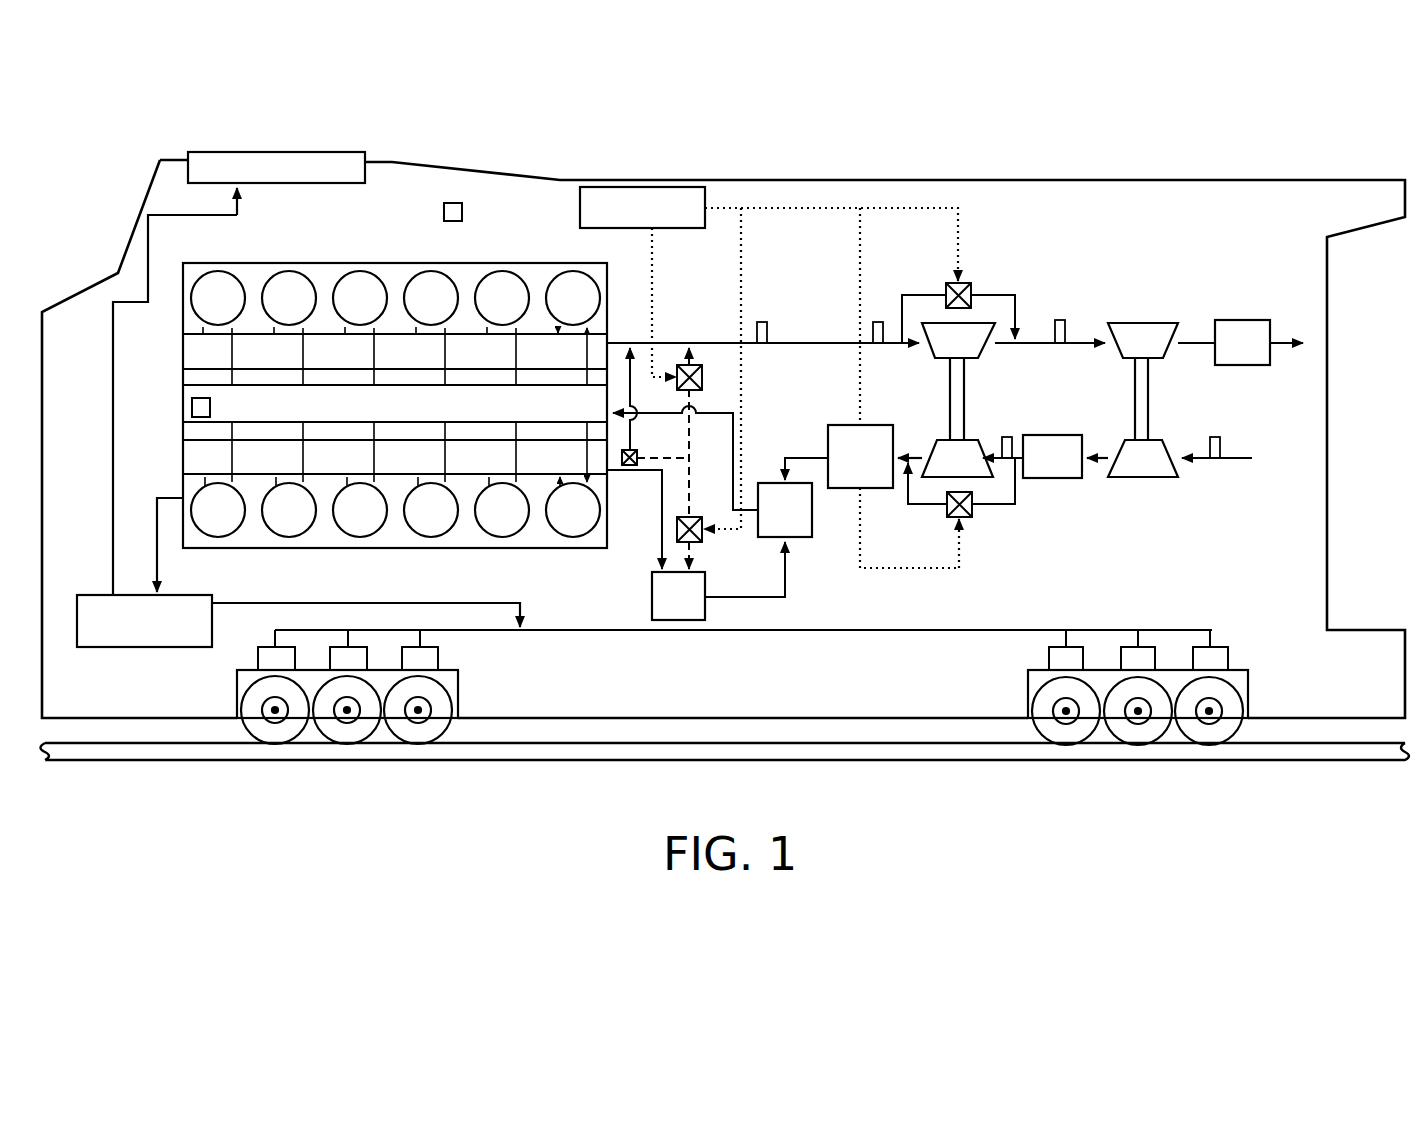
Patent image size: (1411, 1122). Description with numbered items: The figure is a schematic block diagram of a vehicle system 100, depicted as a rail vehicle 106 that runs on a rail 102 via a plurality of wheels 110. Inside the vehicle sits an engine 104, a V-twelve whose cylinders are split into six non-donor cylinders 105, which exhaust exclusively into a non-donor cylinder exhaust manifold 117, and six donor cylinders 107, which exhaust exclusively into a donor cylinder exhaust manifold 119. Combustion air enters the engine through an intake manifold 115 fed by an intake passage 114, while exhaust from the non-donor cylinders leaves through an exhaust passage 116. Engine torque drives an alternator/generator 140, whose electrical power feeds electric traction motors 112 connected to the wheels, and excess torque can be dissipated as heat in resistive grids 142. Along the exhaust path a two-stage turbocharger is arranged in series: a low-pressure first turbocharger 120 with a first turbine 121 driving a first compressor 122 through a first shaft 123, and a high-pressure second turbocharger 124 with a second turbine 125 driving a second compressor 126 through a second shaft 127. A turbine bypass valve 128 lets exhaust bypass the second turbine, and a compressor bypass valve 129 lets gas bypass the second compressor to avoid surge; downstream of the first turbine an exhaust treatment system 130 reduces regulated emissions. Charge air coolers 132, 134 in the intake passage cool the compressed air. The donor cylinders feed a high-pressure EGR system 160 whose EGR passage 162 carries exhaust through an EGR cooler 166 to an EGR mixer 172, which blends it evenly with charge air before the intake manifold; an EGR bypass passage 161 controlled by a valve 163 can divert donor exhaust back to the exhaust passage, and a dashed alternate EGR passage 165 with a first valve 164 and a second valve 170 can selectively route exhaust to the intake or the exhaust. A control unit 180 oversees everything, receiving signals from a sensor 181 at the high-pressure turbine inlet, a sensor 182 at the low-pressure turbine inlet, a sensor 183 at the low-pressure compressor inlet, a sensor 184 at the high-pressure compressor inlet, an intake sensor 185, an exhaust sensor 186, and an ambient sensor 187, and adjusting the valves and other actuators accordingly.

The vehicle system 100 is at (723, 414).
The rail 102 is at (1320, 760).
The engine 104 is at (370, 399).
The non-donor cylinders 105 is at (357, 272).
The rail vehicle 106 is at (1066, 180).
The donor cylinders 107 is at (360, 537).
The wheels 110 is at (435, 700).
The electric traction motors 112 is at (438, 662).
The intake passage 114 is at (1195, 460).
The intake manifold 115 is at (370, 405).
The exhaust passage 116 is at (780, 343).
The non-donor cylinder exhaust manifold 117 is at (183, 352).
The donor cylinder exhaust manifold 119 is at (183, 458).
The first turbocharger 120 is at (1154, 429).
The first turbine 121 is at (1143, 340).
The first compressor 122 is at (1132, 458).
The first shaft 123 is at (1150, 420).
The second turbocharger 124 is at (983, 408).
The second turbine 125 is at (958, 340).
The second compressor 126 is at (945, 458).
The second shaft 127 is at (965, 420).
The turbine bypass valve 128 is at (970, 290).
The compressor bypass valve 129 is at (948, 508).
The exhaust treatment system 130 is at (1242, 342).
The charge air cooler 132 is at (1032, 456).
The charge air cooler 134 is at (839, 456).
The alternator/generator 140 is at (298, 572).
The resistive grids 142 is at (348, 152).
The EGR system 160 is at (732, 482).
The EGR bypass passage 161 is at (632, 375).
The EGR passage 162 is at (662, 497).
The valve 163 is at (634, 451).
The first valve 164 is at (702, 380).
The alternate EGR passage 165 is at (689, 448).
The EGR cooler 166 is at (718, 581).
The second valve 170 is at (698, 540).
The EGR mixer 172 is at (712, 471).
The control unit 180 is at (769, 377).
The sensor 181 is at (878, 322).
The sensor 182 is at (1060, 320).
The sensor 183 is at (1215, 437).
The sensor 184 is at (1007, 437).
The intake sensor 185 is at (192, 408).
The exhaust sensor 186 is at (762, 322).
The ambient sensor 187 is at (443, 213).